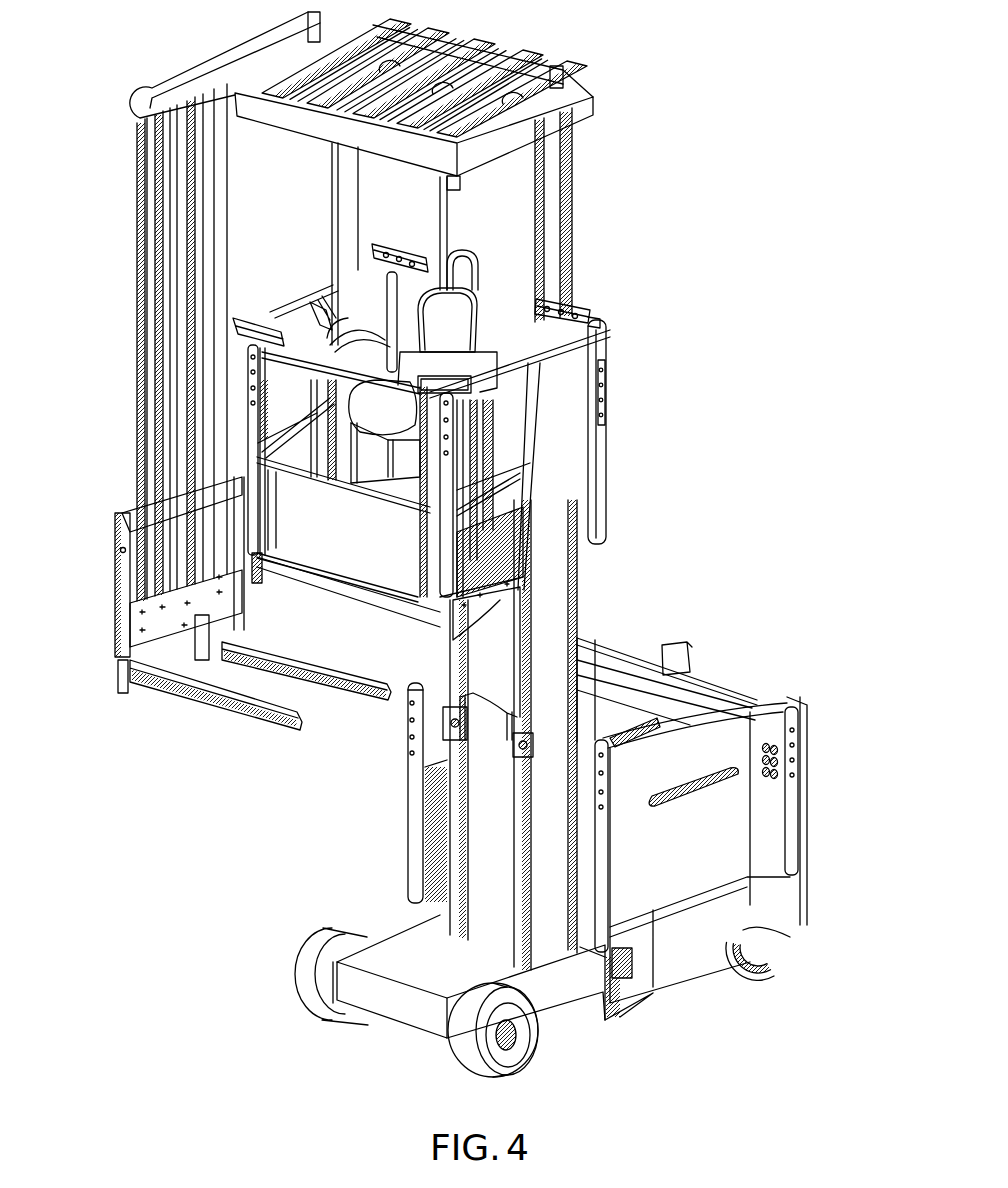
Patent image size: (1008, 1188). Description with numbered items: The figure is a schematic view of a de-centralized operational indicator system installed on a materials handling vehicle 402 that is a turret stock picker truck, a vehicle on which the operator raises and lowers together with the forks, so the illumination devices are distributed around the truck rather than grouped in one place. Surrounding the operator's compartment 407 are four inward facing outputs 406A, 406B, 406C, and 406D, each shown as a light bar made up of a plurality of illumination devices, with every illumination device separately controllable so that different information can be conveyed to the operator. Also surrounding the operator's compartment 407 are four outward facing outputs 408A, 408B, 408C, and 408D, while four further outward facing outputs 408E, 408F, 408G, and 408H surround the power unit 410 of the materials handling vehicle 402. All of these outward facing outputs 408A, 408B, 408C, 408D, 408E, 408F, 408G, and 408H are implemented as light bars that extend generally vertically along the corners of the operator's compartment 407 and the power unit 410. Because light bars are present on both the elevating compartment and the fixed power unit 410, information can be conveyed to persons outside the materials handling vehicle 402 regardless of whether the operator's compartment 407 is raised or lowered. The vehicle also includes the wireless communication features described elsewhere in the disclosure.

The materials handling vehicle 402 is at (744, 313).
The operator's compartment 407 is at (589, 254).
The power unit 410 is at (816, 701).
The inward facing output 406A is at (470, 388).
The inward facing output 406B is at (266, 318).
The inward facing output 406C is at (406, 246).
The inward facing output 406D is at (588, 305).
The outward facing output 408A is at (447, 460).
The outward facing output 408B is at (250, 413).
The outward facing output 408C is at (334, 258).
The outward facing output 408D is at (601, 380).
The outward facing output 408E is at (602, 818).
The outward facing output 408F is at (407, 753).
The outward facing output 408G is at (624, 627).
The outward facing output 408H is at (801, 770).